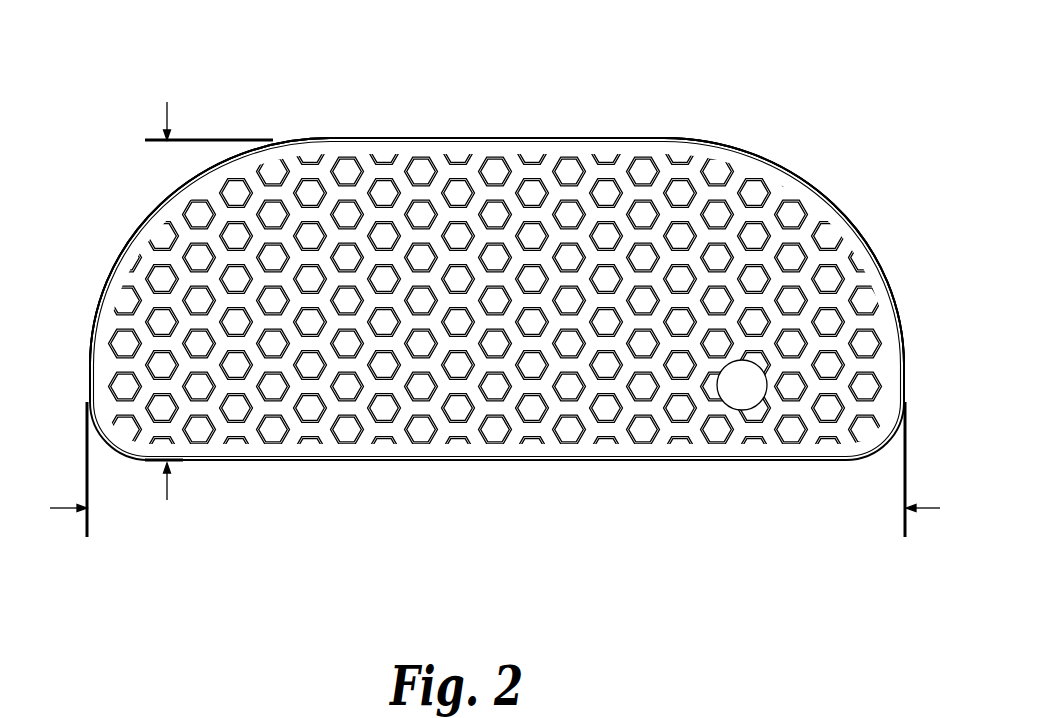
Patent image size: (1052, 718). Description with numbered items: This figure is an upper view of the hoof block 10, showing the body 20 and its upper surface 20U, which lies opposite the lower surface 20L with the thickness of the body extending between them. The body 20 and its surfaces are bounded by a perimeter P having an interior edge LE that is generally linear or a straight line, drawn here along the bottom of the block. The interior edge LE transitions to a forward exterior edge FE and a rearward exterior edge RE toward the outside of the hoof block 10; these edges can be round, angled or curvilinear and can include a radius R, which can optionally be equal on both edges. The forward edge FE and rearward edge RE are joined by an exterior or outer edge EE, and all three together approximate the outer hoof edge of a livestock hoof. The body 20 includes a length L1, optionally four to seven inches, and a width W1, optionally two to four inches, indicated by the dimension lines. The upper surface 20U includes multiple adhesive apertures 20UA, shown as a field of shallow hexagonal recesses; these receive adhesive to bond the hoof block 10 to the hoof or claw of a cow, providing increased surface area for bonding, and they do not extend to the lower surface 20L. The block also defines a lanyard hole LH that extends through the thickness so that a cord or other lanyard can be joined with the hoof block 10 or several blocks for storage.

The hoof block 10 is at (700, 85).
The body 20 is at (747, 145).
The adhesive apertures 20UA is at (717, 212).
The upper surface 20U is at (778, 192).
The lower surface 20L is at (703, 458).
The radius R is at (152, 210).
The rearward exterior edge RE is at (868, 255).
The forward exterior edge FE is at (115, 270).
The outer edge EE is at (429, 138).
The interior edge LE is at (500, 458).
The perimeter P is at (617, 458).
The width W1 is at (209, 291).
The length L1 is at (481, 469).
The lanyard hole LH is at (754, 397).